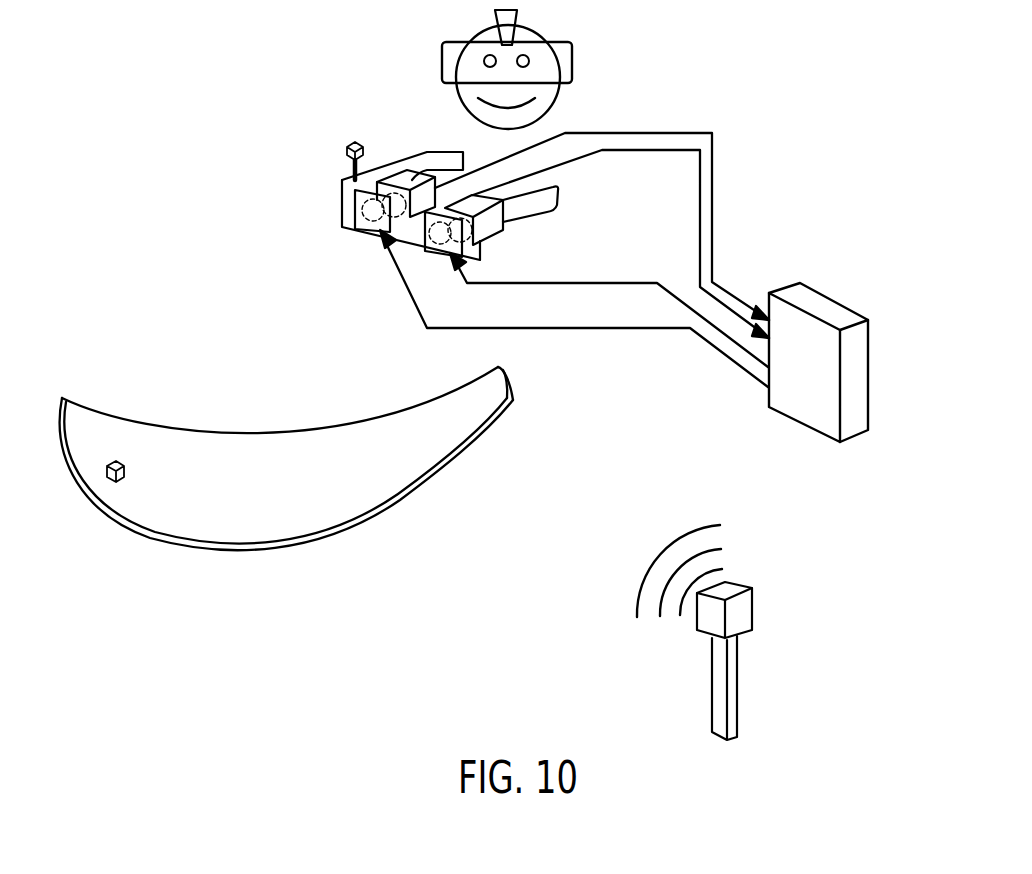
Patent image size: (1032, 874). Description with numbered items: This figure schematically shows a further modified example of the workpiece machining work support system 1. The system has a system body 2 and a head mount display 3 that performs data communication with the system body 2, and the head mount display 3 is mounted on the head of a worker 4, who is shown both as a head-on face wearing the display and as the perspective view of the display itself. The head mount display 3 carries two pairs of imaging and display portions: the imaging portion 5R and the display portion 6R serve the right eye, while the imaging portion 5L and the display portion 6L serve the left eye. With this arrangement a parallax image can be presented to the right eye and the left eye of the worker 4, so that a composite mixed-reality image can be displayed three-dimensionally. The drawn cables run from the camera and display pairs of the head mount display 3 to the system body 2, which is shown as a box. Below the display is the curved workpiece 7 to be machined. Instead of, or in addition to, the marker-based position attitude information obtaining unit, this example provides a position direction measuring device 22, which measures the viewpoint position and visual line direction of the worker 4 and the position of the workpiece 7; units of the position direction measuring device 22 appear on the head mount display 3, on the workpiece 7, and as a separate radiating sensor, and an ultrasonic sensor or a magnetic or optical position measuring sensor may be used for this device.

The workpiece machining work support system 1 is at (808, 78).
The system body 2 is at (790, 403).
The head mount display 3 is at (573, 65).
The worker 4 is at (538, 32).
The imaging portion for the right eye 5R is at (403, 180).
The imaging portion for the left eye 5L is at (493, 233).
The display portion for the right eye 6R is at (357, 223).
The display portion for the left eye 6L is at (427, 250).
The workpiece 7 is at (467, 460).
The position direction measuring device 22 is at (348, 145).